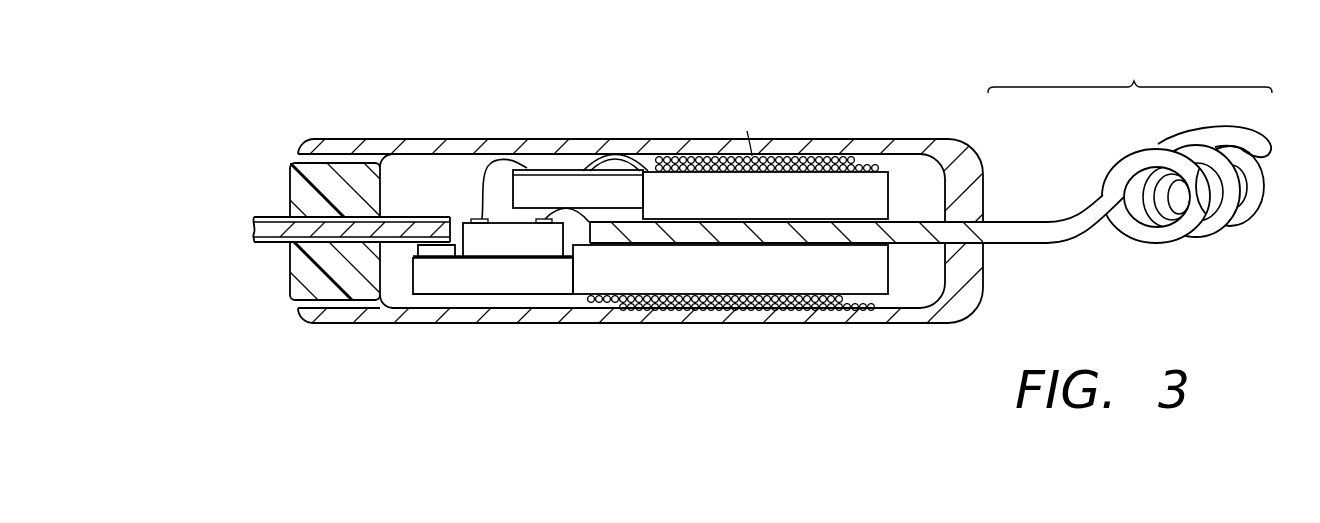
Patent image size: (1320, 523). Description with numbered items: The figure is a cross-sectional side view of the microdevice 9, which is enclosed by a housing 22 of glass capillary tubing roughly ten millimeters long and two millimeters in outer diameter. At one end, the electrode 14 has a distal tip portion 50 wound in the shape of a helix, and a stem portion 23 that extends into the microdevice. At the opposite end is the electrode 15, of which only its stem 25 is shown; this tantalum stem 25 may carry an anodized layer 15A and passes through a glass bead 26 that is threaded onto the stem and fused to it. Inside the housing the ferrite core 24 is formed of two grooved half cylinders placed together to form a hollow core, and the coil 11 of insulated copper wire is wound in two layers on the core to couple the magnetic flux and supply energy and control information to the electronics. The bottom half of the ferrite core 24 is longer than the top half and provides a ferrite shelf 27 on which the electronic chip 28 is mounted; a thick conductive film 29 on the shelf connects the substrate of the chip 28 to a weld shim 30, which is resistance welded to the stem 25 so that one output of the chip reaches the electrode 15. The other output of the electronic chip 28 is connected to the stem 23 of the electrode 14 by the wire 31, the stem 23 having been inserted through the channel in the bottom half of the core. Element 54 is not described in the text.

The microdevice 9 is at (711, 61).
The coil 11 is at (752, 300).
The electrode 14 is at (1130, 74).
The electrode 15 is at (190, 121).
The anodized layer 15A is at (262, 244).
The housing 22 is at (460, 139).
The stem portion 23 is at (927, 231).
The ferrite core 24 is at (867, 203).
The stem portion 25 is at (282, 231).
The glass bead 26 is at (300, 290).
The ferrite shelf 27 is at (470, 278).
The electronic chip 28 is at (507, 258).
The conductive film 29 is at (547, 258).
The weld shim 30 is at (433, 248).
The electrical conductor 31 is at (567, 208).
The distal tip portion 50 is at (1210, 241).
The insulating sheath 54 is at (262, 219).